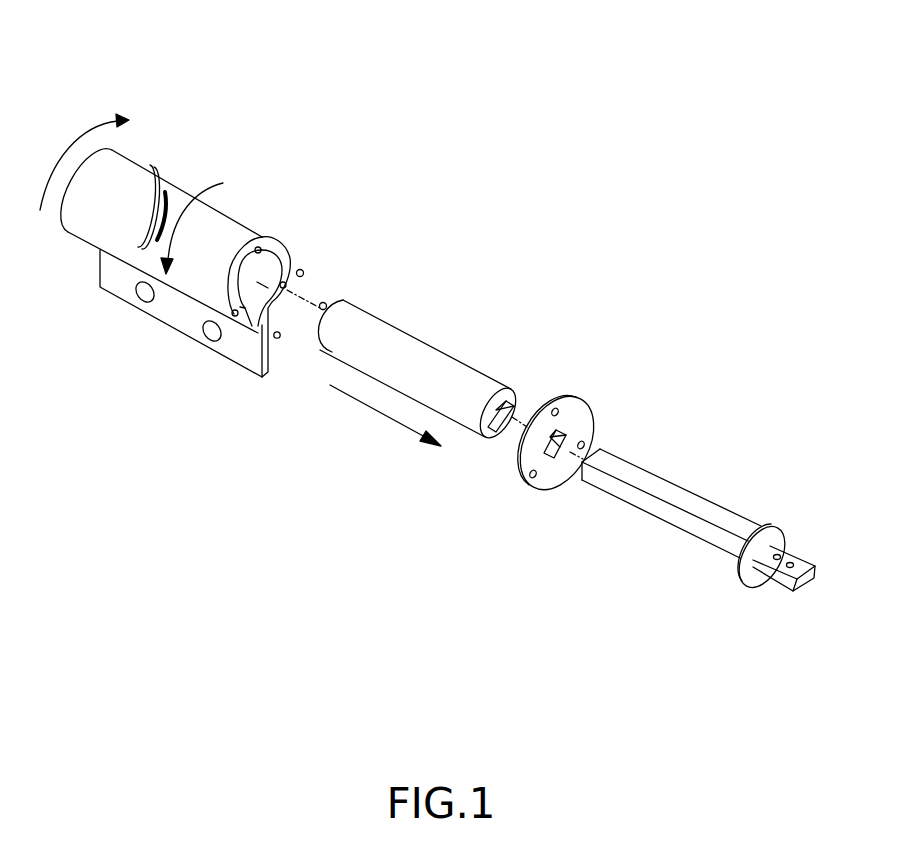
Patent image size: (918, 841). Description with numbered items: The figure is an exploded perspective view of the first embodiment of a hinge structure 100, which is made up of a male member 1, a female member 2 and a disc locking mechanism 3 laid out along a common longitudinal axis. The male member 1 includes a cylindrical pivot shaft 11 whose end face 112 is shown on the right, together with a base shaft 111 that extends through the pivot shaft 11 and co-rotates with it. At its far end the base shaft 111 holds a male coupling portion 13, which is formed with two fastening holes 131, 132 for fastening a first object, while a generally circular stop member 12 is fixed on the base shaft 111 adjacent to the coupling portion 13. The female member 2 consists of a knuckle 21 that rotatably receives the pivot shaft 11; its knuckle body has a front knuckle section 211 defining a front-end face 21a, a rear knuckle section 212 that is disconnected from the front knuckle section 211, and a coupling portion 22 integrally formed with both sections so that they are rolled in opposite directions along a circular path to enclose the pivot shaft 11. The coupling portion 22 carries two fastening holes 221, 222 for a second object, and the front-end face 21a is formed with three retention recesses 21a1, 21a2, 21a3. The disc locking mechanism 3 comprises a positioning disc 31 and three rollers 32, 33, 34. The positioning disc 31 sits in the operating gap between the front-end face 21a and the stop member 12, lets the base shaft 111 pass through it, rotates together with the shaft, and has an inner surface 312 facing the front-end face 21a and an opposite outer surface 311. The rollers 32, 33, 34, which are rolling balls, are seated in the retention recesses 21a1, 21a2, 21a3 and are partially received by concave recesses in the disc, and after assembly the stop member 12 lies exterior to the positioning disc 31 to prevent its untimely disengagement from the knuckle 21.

The hinge structure 100 is at (465, 128).
The male member 1 is at (673, 413).
The pivot shaft 11 is at (450, 338).
The base shaft 111 is at (655, 508).
The plug end face slot 112 is at (457, 407).
The stop member 12 is at (748, 580).
The male coupling portion 13 is at (797, 590).
The fastening hole 131 is at (791, 563).
The fastening hole 132 is at (776, 562).
The female member 2 is at (305, 108).
The knuckle 21 is at (225, 147).
The front knuckle section 211 is at (208, 246).
The rear knuckle section 212 is at (123, 200).
The front-end face 21a is at (291, 250).
The retention recess 21a1 is at (235, 312).
The retention recess 21a2 is at (262, 238).
The retention recess 21a3 is at (292, 262).
The coupling portion 22 is at (116, 286).
The fastening hole 221 is at (210, 333).
The fastening hole 222 is at (145, 297).
The disc locking mechanism 3 is at (577, 332).
The positioning disc 31 is at (565, 398).
The outer surface 311 is at (552, 472).
The inner surface 312 is at (535, 408).
The roller 32 is at (277, 338).
The roller 33 is at (304, 273).
The roller 34 is at (327, 306).